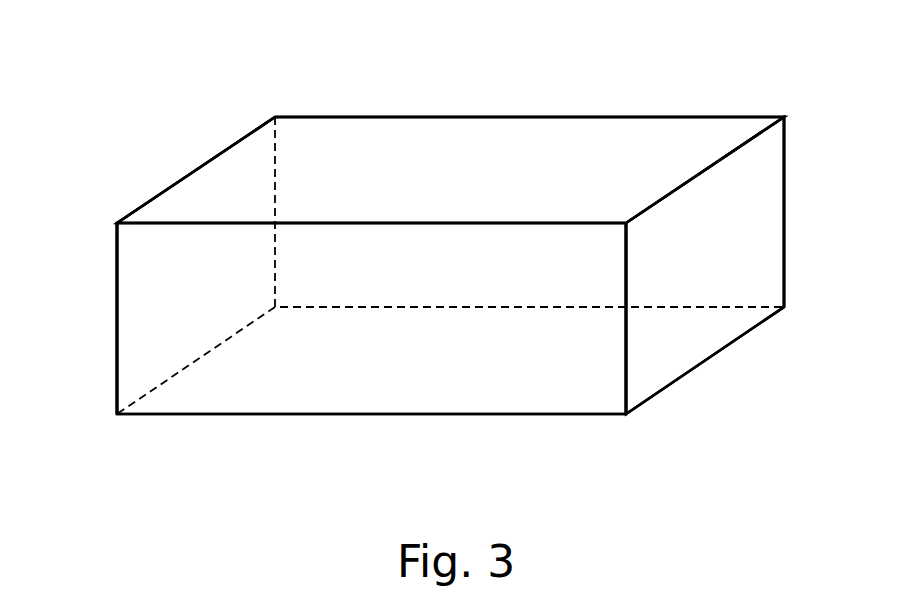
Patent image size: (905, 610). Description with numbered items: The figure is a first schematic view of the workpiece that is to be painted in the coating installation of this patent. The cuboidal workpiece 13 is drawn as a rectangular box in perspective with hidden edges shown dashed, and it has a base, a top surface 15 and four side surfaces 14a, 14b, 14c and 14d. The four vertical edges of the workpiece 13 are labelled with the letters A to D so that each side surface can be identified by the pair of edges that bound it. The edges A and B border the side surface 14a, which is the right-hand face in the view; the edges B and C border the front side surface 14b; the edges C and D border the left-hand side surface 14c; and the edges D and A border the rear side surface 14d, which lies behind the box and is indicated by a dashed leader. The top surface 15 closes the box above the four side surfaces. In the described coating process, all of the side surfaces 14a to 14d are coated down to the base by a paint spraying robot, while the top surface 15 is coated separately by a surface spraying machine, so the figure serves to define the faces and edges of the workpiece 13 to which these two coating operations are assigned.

The cuboidal workpiece 13 is at (723, 90).
The top surface 15 is at (423, 137).
The side surface 14a is at (727, 292).
The side surface 14b is at (378, 323).
The side surface 14c is at (172, 293).
The side surface 14d is at (485, 180).
The edge A is at (785, 212).
The edge B is at (627, 369).
The edge C is at (117, 312).
The edge D is at (275, 145).